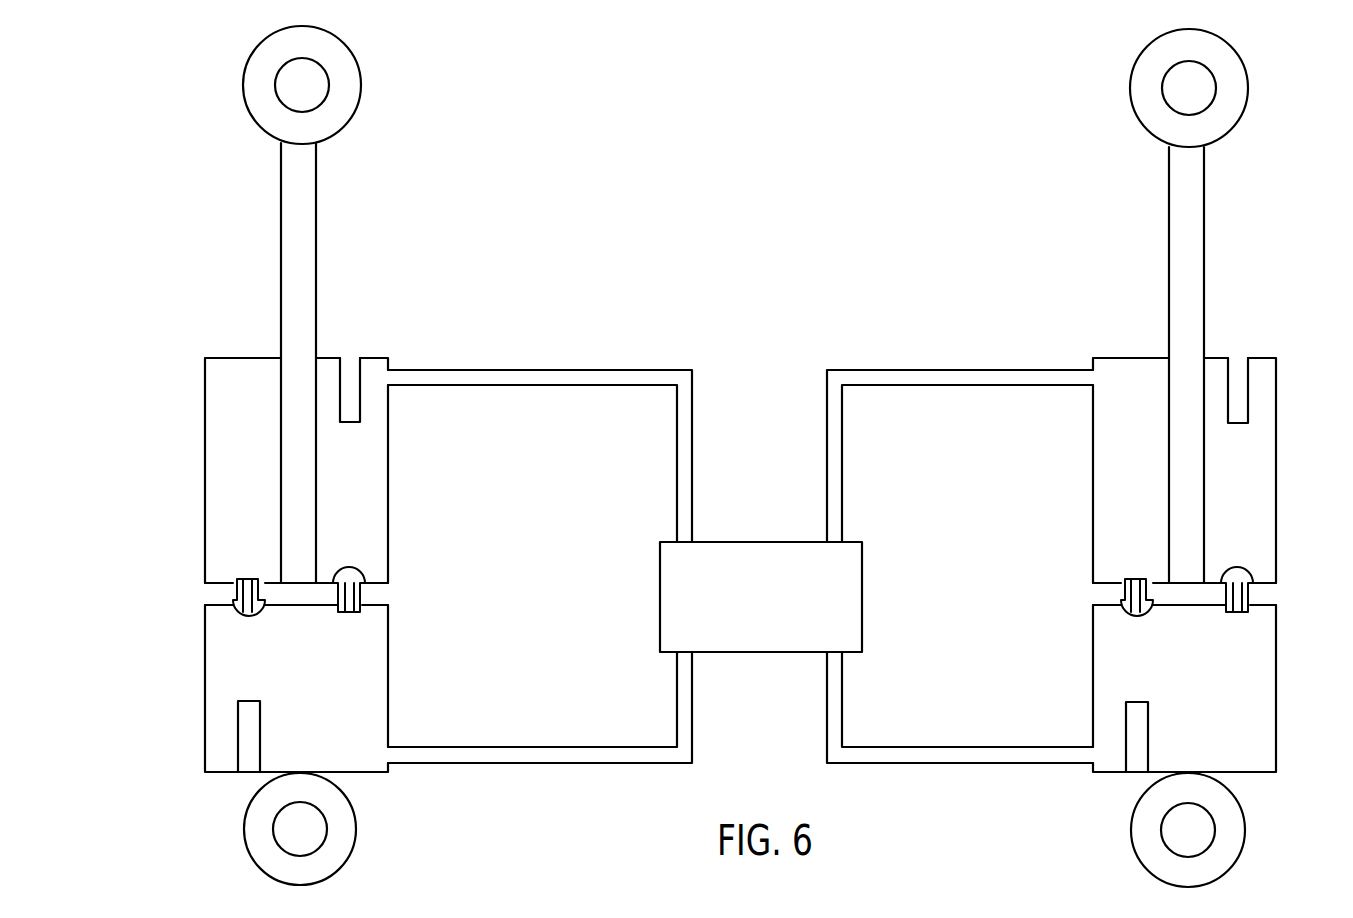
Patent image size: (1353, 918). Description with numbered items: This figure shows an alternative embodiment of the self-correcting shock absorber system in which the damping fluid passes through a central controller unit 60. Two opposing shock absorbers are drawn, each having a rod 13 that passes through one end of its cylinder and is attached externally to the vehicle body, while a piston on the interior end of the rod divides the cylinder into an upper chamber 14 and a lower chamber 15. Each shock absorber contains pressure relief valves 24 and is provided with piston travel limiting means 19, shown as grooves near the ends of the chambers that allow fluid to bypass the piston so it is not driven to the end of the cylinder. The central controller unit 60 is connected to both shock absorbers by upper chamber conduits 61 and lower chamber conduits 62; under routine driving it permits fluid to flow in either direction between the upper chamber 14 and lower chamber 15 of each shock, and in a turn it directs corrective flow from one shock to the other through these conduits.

The rod 13 is at (305, 219).
The upper chamber 14 is at (220, 420).
The lower chamber 15 is at (228, 683).
The piston travel limiting means 19 is at (365, 362).
The pressure relief valve 24 is at (240, 576).
The central controller unit 60 is at (752, 540).
The upper chamber conduit 61 is at (527, 388).
The lower chamber conduit 62 is at (542, 747).